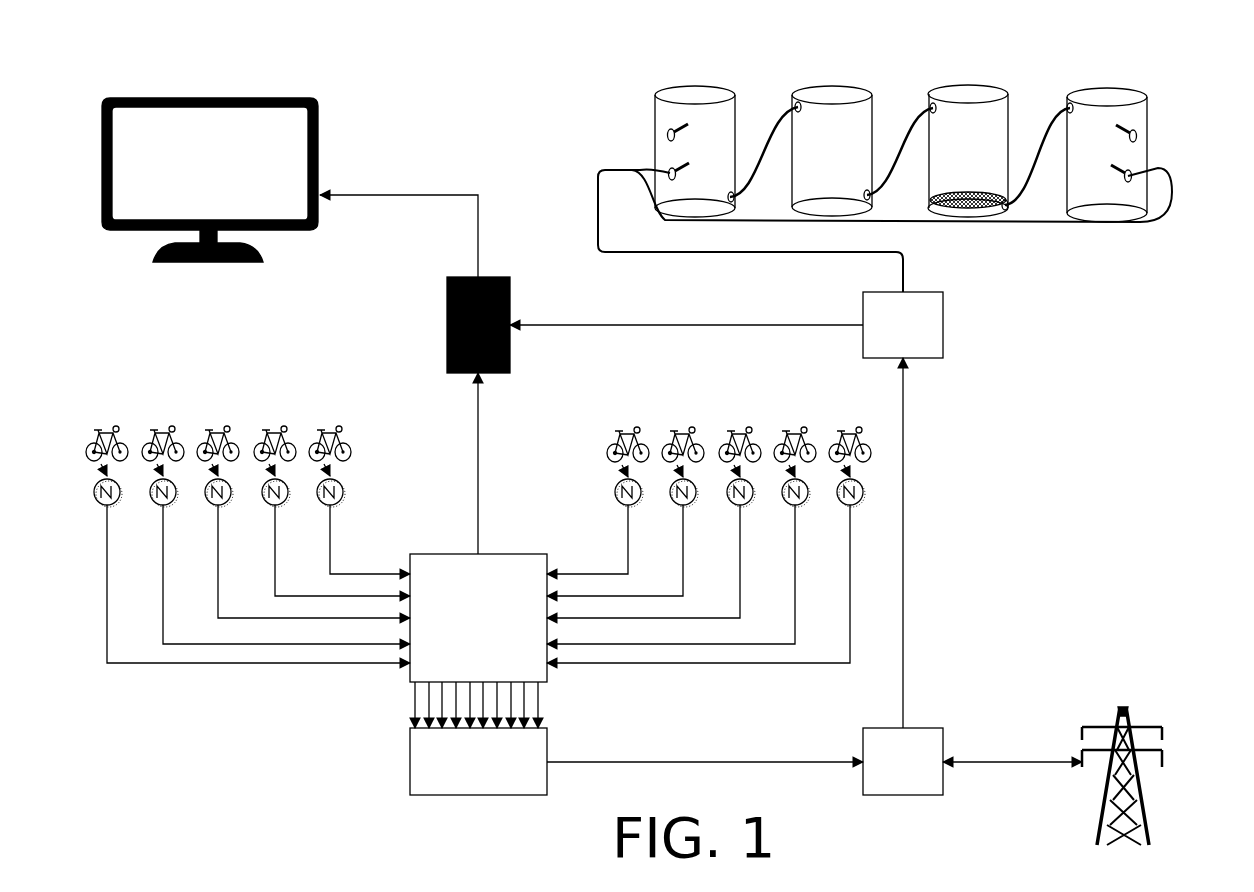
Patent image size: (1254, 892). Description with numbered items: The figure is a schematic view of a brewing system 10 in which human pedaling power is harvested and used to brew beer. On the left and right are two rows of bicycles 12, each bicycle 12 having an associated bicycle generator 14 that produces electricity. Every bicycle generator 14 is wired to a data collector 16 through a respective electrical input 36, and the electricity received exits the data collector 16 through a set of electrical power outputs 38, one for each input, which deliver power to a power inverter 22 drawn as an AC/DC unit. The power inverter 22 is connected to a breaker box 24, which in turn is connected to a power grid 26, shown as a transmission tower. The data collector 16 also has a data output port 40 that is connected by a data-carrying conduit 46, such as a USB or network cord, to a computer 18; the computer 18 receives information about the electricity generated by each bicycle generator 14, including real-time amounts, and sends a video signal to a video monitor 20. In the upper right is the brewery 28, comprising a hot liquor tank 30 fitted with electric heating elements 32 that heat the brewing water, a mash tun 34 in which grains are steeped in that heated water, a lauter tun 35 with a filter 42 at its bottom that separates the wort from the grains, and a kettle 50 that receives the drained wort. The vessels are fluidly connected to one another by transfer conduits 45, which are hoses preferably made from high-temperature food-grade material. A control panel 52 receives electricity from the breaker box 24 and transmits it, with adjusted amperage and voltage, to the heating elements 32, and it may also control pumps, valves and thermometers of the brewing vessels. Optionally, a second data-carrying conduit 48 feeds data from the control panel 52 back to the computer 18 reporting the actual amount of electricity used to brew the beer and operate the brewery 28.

The brewing system 10 is at (200, 770).
The bicycle 12 is at (307, 428).
The bicycle generator 14 is at (150, 497).
The data collector 16 is at (478, 618).
The computer 18 is at (447, 315).
The video monitor 20 is at (320, 132).
The power inverter 22 is at (410, 773).
The breaker box 24 is at (972, 576).
The power grid 26 is at (1120, 705).
The brewery 28 is at (1030, 258).
The hot liquor tank 30 is at (690, 93).
The electric heating element 32 is at (668, 172).
The mash tun 34 is at (835, 92).
The lauter tun 35 is at (972, 93).
The electrical input 36 is at (478, 604).
The electrical power output 38 is at (477, 705).
The data output port 40 is at (477, 552).
The filter 42 is at (976, 210).
The transfer conduit 45 is at (770, 123).
The data-carrying conduit 46 is at (497, 463).
The second data-carrying conduit 48 is at (686, 305).
The kettle 50 is at (1097, 95).
The control panel 52 is at (903, 325).